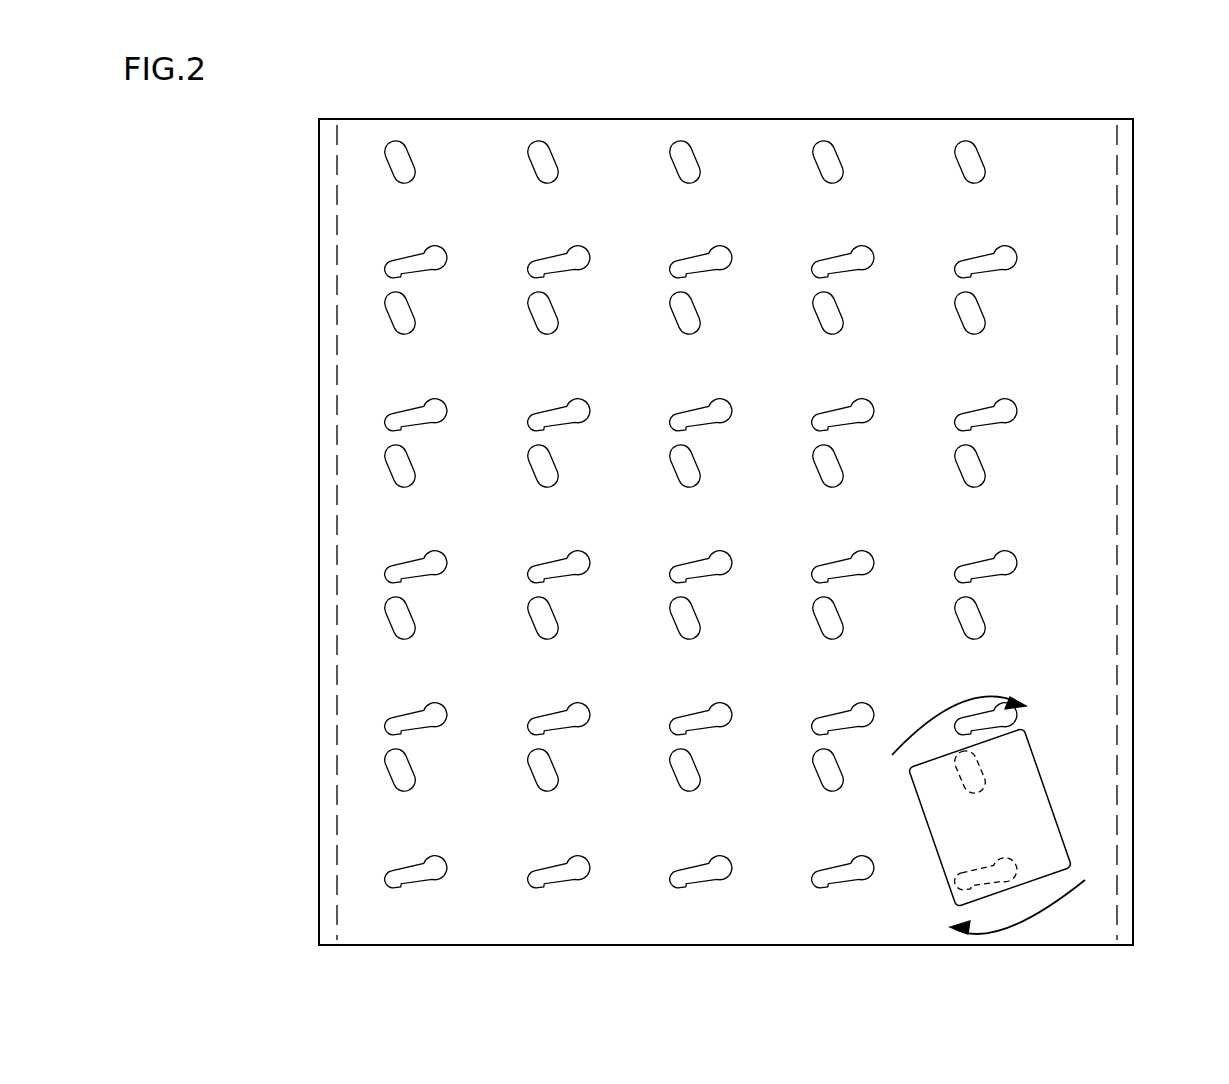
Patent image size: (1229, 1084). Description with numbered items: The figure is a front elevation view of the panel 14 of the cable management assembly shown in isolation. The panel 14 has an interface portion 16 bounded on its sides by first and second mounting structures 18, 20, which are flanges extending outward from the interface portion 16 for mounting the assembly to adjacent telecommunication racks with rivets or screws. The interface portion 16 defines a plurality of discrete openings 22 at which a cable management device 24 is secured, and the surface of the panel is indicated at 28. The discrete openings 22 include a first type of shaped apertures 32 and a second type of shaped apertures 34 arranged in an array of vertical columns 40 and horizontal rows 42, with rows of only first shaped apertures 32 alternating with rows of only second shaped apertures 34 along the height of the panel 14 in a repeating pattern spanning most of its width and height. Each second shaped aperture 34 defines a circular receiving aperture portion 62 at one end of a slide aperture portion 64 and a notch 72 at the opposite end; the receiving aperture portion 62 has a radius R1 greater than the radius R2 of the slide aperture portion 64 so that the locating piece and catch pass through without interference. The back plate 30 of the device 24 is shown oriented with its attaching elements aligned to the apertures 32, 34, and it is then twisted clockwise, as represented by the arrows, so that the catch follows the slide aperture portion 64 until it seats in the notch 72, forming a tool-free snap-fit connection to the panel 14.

The panel 14 is at (248, 677).
The interface portion 16 is at (643, 672).
The first mounting structure 18 is at (335, 312).
The second mounting structure 20 is at (1116, 330).
The discrete openings 22 is at (982, 162).
The cable management device 24 is at (1042, 750).
The panel surface 28 is at (644, 832).
The back plate 30 is at (950, 835).
The first shaped aperture 32 is at (812, 170).
The second shaped aperture 34 is at (726, 251).
The vertical columns 40 is at (398, 127).
The horizontal rows 42 is at (358, 165).
The receiving aperture portion 62 is at (733, 878).
The slide aperture portion 64 is at (688, 885).
The notch 72 is at (826, 887).
The radius of receiving aperture portion R1 is at (720, 858).
The radius of slide aperture portion R2 is at (698, 868).